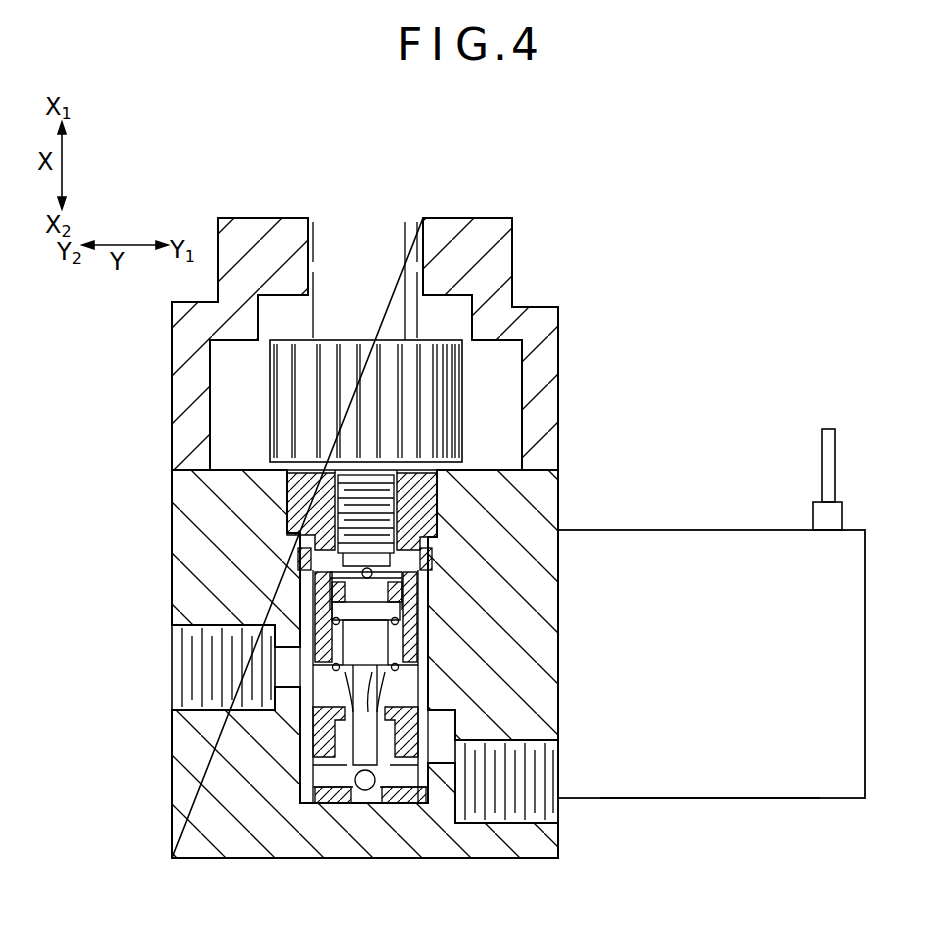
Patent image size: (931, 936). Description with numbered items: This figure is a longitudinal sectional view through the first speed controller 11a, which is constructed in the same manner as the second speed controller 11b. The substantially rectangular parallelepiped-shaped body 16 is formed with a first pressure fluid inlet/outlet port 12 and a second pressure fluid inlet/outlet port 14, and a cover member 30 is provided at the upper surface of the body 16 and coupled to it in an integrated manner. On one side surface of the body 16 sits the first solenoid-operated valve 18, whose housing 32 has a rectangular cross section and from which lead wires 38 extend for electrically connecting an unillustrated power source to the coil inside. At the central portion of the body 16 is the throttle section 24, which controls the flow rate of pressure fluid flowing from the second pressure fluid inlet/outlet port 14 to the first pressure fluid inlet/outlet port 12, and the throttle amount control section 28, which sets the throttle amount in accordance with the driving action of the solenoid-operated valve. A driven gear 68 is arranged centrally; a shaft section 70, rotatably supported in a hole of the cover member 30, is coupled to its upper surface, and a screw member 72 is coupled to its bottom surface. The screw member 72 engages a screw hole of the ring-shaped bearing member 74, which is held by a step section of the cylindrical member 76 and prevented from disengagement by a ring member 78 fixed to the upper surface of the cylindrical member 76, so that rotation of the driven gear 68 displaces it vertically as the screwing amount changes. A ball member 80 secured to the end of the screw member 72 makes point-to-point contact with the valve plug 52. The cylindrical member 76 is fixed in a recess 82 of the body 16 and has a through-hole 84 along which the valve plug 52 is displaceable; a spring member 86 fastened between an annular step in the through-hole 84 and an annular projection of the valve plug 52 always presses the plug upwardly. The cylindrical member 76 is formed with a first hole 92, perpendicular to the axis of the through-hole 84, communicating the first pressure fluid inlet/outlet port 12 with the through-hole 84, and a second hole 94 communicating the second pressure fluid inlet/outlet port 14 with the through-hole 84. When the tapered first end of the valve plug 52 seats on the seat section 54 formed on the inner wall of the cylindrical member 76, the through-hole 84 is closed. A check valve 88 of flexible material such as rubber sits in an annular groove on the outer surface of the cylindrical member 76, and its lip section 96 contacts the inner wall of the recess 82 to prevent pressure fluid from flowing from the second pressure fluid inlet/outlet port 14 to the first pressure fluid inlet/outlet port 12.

The first speed controller 11a is at (745, 167).
The second speed controller 11b is at (745, 167).
The first pressure fluid inlet/outlet port 12 is at (195, 632).
The second pressure fluid inlet/outlet port 14 is at (525, 813).
The body 16 is at (240, 858).
The first solenoid-operated valve 18 is at (866, 645).
The throttle section 24 is at (335, 790).
The throttle amount control section 28 is at (378, 468).
The cover member 30 is at (495, 265).
The housing 32 is at (745, 783).
The lead wires 38 is at (828, 430).
The valve plug 52 is at (378, 632).
The seat section 54 is at (362, 795).
The driven gear 68 is at (375, 350).
The shaft section 70 is at (330, 240).
The screw member 72 is at (445, 540).
The bearing member 74 is at (297, 490).
The cylindrical member 76 is at (400, 672).
The ring member 78 is at (290, 468).
The ball member 80 is at (303, 563).
The recess 82 is at (298, 690).
The through-hole 84 is at (432, 565).
The spring member 86 is at (295, 597).
The check valve 88 is at (415, 707).
The first hole 92 is at (260, 622).
The second hole 94 is at (420, 790).
The lip section 96 is at (313, 735).